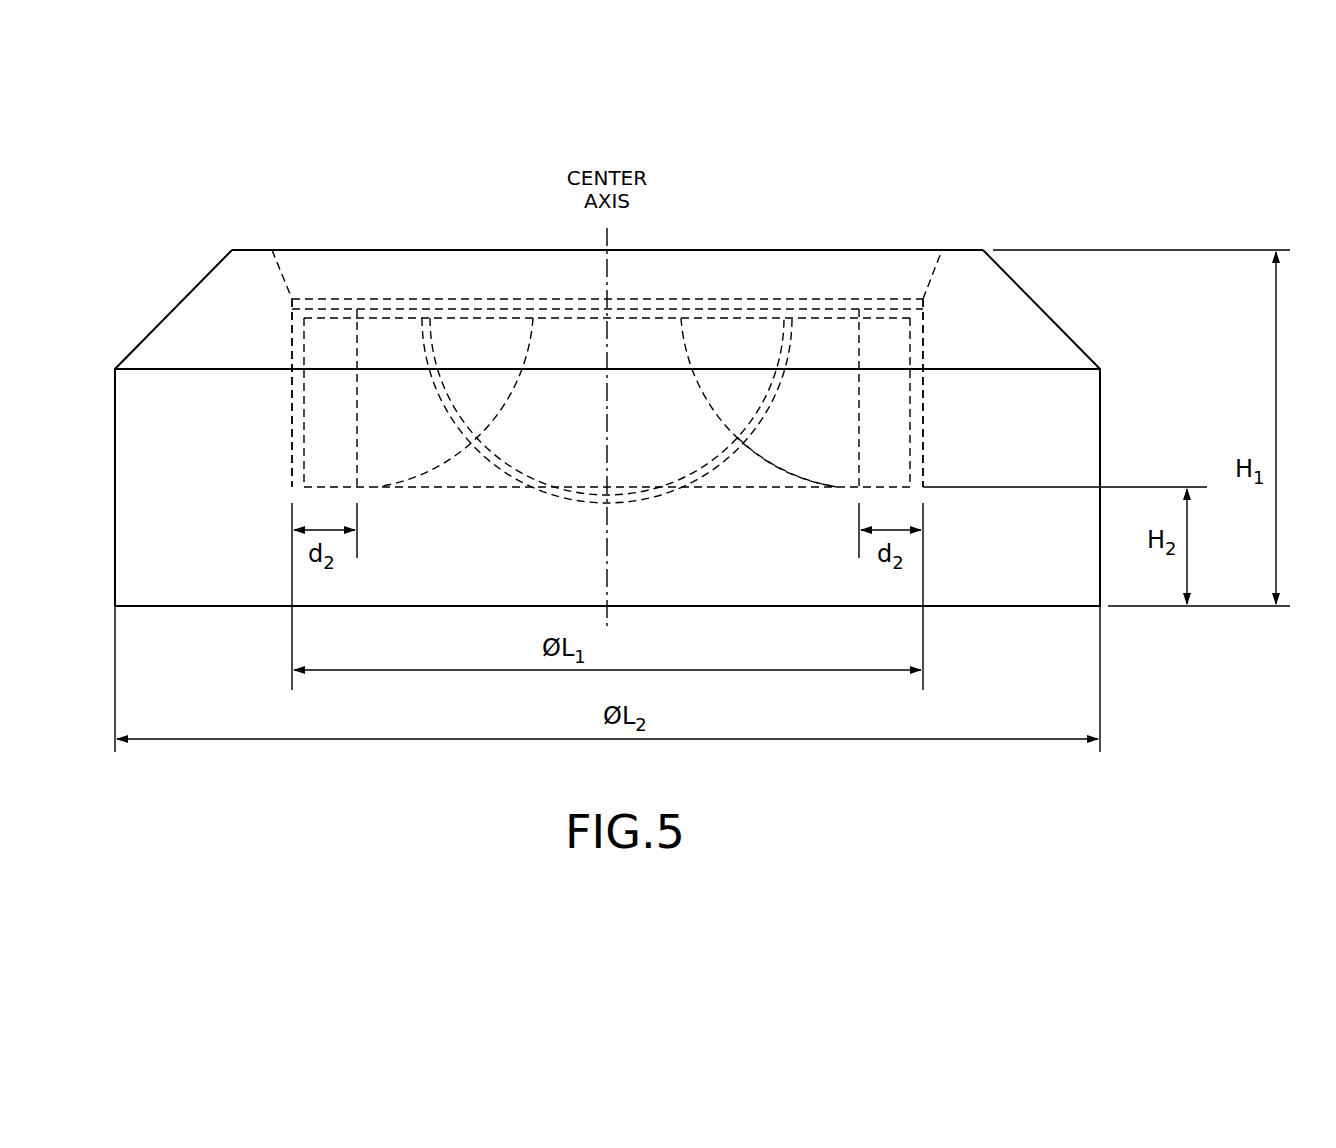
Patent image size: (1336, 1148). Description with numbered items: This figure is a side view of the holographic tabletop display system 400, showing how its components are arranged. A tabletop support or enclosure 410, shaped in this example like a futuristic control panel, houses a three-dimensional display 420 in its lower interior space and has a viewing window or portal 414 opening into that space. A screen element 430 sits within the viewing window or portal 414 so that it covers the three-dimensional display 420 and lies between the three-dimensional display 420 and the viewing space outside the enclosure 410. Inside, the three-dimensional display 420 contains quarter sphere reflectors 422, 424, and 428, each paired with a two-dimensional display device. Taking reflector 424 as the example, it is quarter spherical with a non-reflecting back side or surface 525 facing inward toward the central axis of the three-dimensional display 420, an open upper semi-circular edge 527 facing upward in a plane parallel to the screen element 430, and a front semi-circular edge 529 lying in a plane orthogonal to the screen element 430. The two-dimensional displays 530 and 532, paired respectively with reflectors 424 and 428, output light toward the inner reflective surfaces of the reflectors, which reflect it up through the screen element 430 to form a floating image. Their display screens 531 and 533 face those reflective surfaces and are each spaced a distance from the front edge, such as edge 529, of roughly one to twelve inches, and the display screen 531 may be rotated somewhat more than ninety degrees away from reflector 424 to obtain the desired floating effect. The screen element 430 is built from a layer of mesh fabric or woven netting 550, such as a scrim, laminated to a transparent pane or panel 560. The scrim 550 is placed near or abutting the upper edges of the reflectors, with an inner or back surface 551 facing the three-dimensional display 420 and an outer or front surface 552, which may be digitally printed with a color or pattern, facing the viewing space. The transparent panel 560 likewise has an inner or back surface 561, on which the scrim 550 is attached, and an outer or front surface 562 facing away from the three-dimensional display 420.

The holographic tabletop display system 400 is at (1062, 203).
The tabletop support or enclosure 410 is at (1103, 425).
The viewing window or portal 414 is at (933, 270).
The 3D display 420 is at (246, 313).
The reflector 422 is at (586, 516).
The reflector 424 is at (832, 512).
The reflector 428 is at (394, 515).
The screen element 430 is at (325, 275).
The back side or surface 525 is at (762, 457).
The upper semi-circular edge 527 is at (735, 310).
The front semi-circular edge 529 is at (858, 460).
The 2D display 530 is at (936, 413).
The display screen 531 is at (910, 398).
The 2D display 532 is at (287, 411).
The display screen 533 is at (303, 445).
The mesh fabric or woven netting 550 is at (276, 298).
The inner or back surface 551 is at (342, 313).
The outer or front surface 552 is at (405, 303).
The transparent pane or panel 560 is at (943, 302).
The inner or back surface 561 is at (913, 306).
The outer or front surface 562 is at (865, 293).